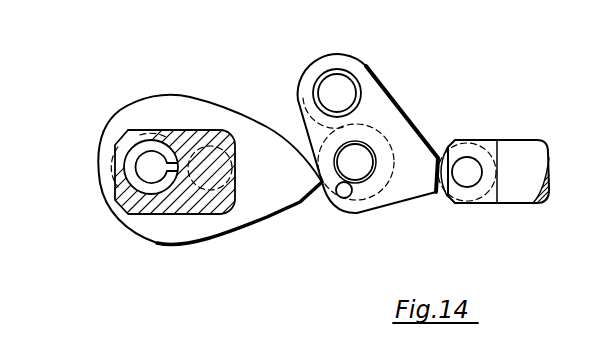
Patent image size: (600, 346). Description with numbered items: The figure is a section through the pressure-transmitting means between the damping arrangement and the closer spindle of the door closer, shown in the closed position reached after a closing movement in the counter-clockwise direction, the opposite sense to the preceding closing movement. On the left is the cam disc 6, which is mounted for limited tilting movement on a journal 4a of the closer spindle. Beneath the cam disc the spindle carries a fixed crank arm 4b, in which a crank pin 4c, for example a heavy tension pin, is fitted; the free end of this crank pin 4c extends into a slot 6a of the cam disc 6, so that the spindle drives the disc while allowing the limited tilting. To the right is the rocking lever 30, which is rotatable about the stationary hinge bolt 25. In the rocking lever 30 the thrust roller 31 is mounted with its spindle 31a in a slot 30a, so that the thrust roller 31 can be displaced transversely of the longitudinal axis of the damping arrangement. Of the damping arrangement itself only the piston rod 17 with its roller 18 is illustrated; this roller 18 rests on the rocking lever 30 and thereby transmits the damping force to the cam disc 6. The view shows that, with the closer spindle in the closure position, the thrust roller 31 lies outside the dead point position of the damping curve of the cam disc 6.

The cam disc 6 is at (167, 232).
The slot 6a is at (147, 128).
The journal 4a is at (225, 129).
The crank arm 4b is at (128, 200).
The crank pin 4c is at (130, 164).
The hinge bolt 25 is at (342, 88).
The rocking lever 30 is at (392, 112).
The slot 30a is at (344, 194).
The thrust roller 31 is at (379, 200).
The spindle 31a is at (364, 164).
The piston rod 17 is at (528, 150).
The roller 18 is at (438, 186).